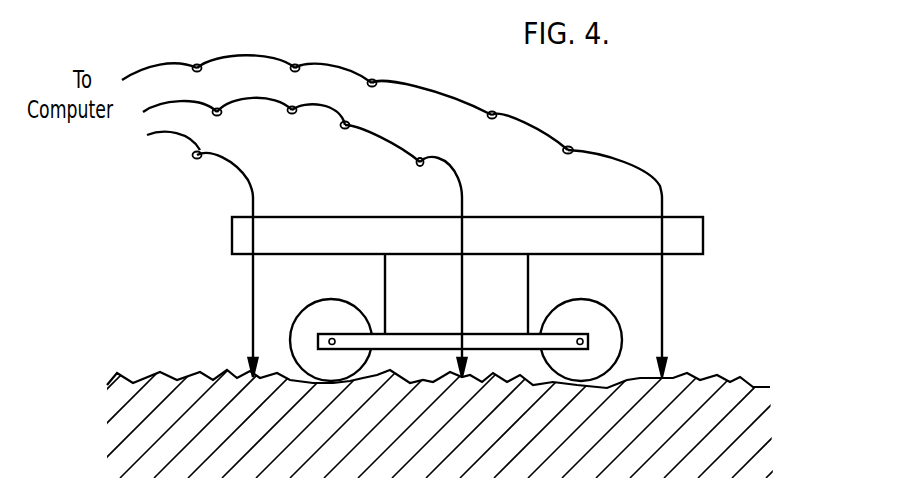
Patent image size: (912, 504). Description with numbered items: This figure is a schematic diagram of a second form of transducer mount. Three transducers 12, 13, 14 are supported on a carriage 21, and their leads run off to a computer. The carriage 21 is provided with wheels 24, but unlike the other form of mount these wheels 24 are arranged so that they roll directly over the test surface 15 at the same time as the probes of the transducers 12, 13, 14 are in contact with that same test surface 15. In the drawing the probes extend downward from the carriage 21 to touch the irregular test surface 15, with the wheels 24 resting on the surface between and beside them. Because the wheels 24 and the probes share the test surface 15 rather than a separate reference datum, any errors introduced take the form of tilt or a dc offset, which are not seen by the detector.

The transducer 12 is at (250, 280).
The transducer 13 is at (458, 297).
The transducer 14 is at (663, 280).
The test surface 15 is at (687, 375).
The carriage 21 is at (358, 223).
The wheels 24 is at (328, 312).